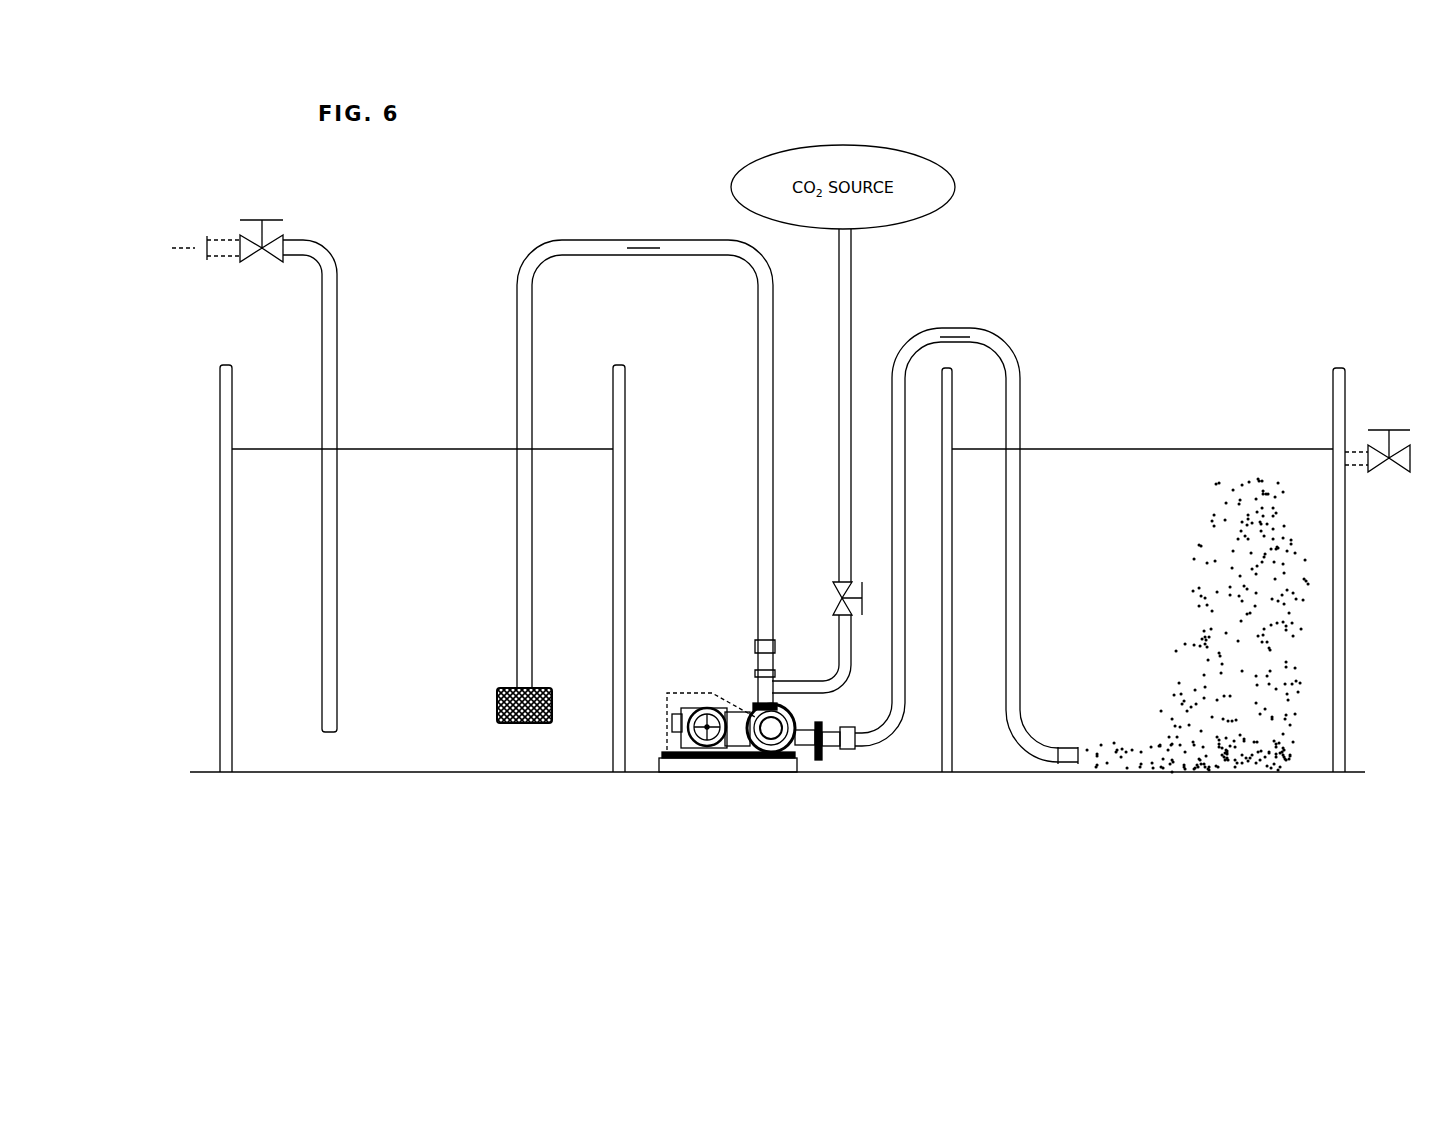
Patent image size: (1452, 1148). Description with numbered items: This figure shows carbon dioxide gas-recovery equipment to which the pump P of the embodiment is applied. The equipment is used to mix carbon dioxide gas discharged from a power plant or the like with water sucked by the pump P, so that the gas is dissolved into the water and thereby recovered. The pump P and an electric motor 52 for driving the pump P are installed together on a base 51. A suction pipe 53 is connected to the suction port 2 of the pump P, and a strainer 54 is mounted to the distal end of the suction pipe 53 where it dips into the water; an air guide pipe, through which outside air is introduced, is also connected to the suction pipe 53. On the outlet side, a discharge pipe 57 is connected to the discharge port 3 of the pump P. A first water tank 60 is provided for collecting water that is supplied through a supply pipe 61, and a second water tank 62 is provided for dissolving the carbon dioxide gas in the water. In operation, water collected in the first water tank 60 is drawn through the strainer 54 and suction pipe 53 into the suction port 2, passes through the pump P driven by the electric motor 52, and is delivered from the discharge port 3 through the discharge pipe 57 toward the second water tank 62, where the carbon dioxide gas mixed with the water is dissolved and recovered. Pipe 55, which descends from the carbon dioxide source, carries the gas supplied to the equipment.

The suction port 2 is at (757, 705).
The discharge port 3 is at (797, 760).
The pump P is at (765, 758).
The base 51 is at (666, 772).
The electric motor 52 is at (704, 760).
The suction pipe 53 is at (586, 245).
The strainer 54 is at (531, 725).
The carbon dioxide supply pipe 55 is at (850, 280).
The discharge pipe 57 is at (862, 747).
The first water tank 60 is at (222, 378).
The supply pipe 61 is at (337, 347).
The second water tank 62 is at (1345, 382).